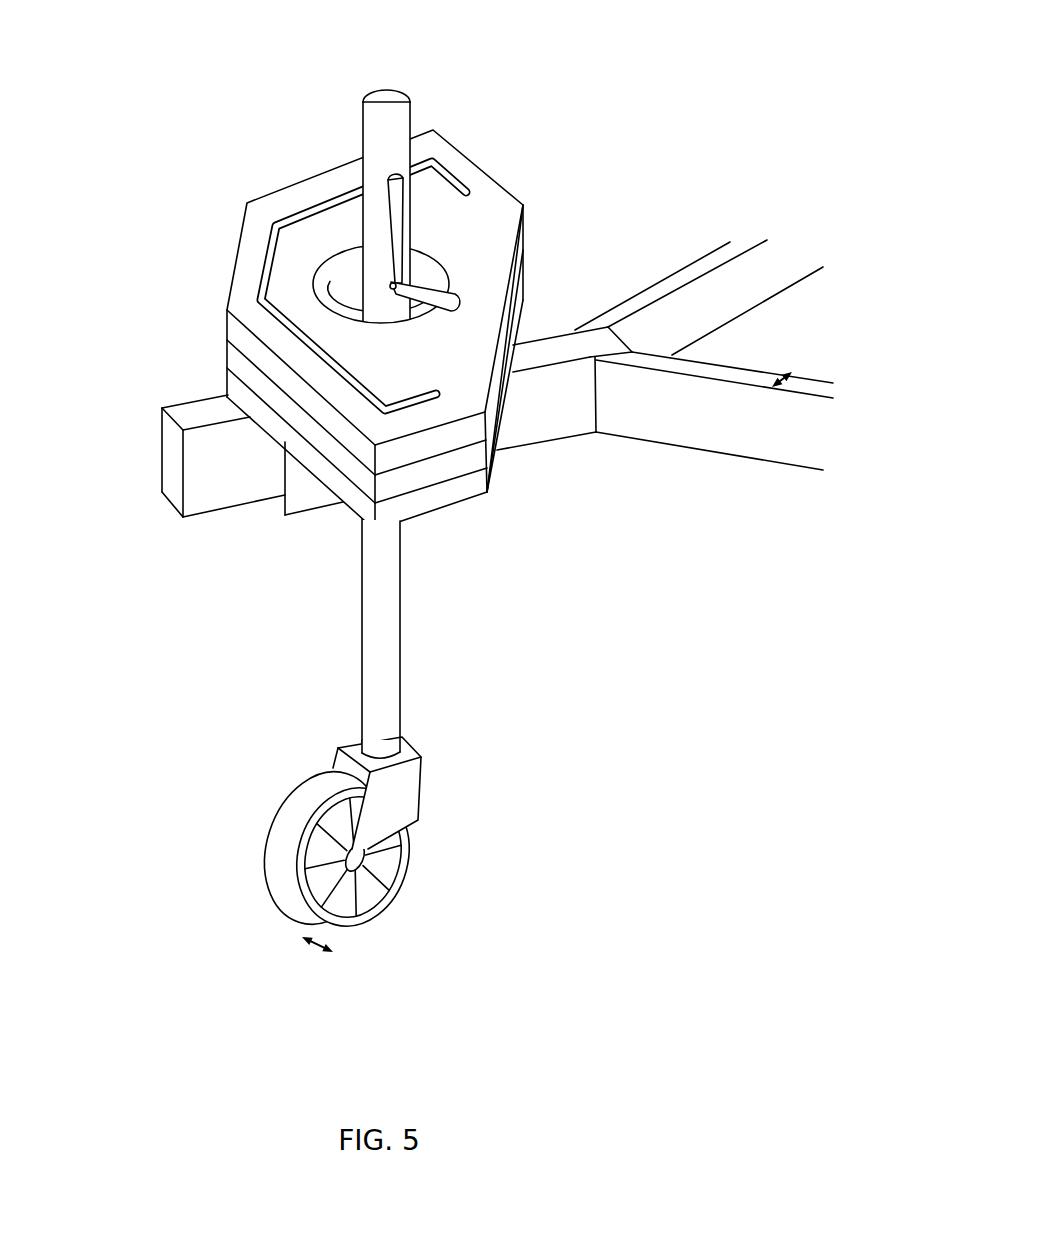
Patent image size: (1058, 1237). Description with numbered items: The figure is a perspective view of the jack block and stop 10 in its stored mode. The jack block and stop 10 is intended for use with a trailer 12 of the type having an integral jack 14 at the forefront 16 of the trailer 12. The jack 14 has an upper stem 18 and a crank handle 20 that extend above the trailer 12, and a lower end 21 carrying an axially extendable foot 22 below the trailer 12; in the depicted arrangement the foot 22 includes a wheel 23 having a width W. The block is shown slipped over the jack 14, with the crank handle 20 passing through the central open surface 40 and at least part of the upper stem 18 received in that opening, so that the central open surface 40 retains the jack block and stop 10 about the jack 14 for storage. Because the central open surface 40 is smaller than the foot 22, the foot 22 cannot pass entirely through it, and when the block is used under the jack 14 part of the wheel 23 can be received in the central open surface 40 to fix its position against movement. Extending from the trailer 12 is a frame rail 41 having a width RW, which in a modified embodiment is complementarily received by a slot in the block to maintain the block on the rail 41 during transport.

The jack block and stop 10 is at (356, 265).
The trailer 12 is at (665, 436).
The jack 14 is at (419, 160).
The forefront 16 is at (268, 487).
The upper stem 18 is at (375, 143).
The crank handle 20 is at (398, 257).
The lower end 21 is at (505, 688).
The foot 22 is at (450, 778).
The wheel 23 is at (285, 878).
The central open surface 40 is at (338, 270).
The rail 41 is at (699, 297).
The width RW is at (789, 360).
The width W is at (312, 967).